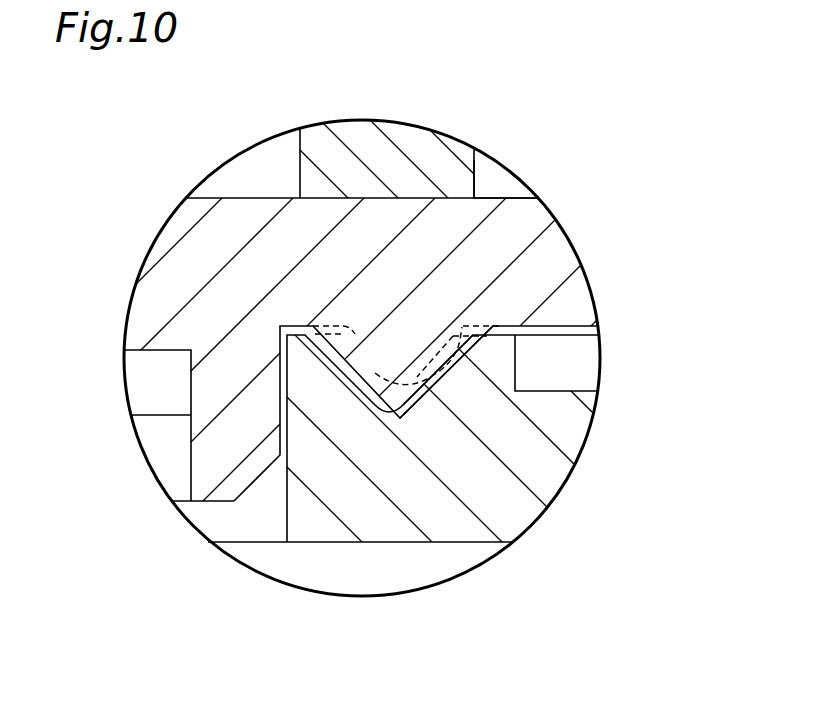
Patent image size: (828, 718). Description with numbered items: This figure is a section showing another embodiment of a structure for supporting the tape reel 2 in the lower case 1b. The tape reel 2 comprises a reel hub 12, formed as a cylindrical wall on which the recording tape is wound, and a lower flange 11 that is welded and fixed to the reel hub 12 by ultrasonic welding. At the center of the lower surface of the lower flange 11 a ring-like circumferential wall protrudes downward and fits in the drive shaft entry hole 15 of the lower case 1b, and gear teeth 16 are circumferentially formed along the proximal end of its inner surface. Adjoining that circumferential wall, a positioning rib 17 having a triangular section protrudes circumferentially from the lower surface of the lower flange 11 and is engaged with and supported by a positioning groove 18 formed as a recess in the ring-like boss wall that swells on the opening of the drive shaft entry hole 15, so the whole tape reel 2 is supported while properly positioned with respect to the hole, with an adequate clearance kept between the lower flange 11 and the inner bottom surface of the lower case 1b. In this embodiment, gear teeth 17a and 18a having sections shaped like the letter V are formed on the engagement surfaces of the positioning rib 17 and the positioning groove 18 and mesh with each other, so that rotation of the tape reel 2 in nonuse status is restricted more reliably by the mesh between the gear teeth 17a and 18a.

The lower case 1b is at (480, 545).
The tape reel 2 is at (492, 178).
The lower flange 11 is at (555, 250).
The reel hub 12 is at (403, 146).
The drive shaft entry hole 15 is at (248, 522).
The gear teeth 16 is at (158, 402).
The positioning rib 17 is at (385, 397).
The gear teeth 17a is at (437, 372).
The positioning groove 18 is at (458, 367).
The gear teeth 18a is at (387, 372).